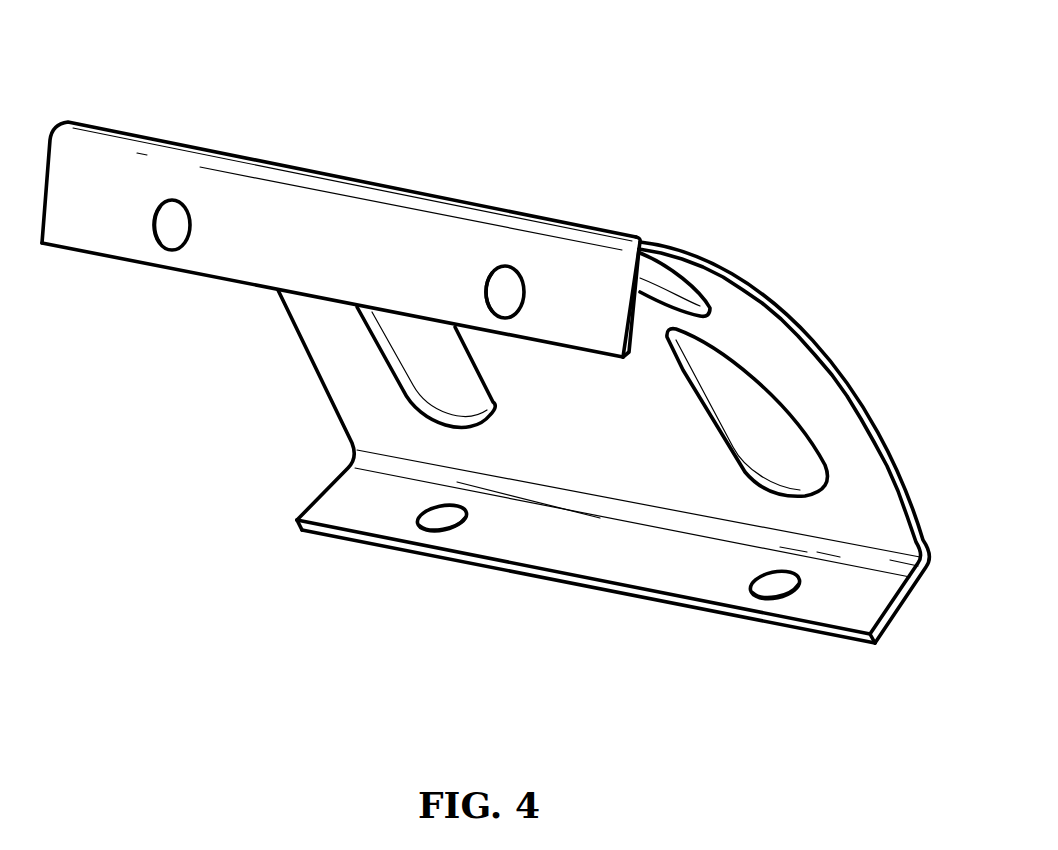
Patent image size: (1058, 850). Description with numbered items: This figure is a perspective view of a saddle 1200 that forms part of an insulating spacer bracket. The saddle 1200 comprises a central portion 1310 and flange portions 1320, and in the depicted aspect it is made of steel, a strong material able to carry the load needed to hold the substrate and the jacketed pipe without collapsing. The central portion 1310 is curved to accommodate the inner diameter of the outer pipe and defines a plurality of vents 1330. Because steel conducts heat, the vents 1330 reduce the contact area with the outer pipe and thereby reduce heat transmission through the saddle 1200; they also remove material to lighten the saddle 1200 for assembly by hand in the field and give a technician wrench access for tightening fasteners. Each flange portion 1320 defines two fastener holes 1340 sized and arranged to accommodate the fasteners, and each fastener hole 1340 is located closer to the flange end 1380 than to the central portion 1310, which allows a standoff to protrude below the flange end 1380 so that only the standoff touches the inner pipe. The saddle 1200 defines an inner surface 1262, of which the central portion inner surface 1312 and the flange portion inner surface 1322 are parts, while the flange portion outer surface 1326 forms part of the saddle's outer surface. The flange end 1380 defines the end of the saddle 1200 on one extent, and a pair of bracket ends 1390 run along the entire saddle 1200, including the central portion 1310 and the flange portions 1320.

The saddle 1200 is at (638, 620).
The inner surface 1262 is at (677, 430).
The central portion 1310 is at (895, 513).
The central portion inner surface 1312 is at (604, 468).
The flange portion 1320 is at (260, 230).
The flange portion inner surface 1322 is at (612, 554).
The flange portion outer surface 1326 is at (389, 268).
The vent 1330 is at (497, 410).
The fastener hole 1340 is at (511, 267).
The flange end 1380 is at (198, 275).
The bracket end 1390 is at (53, 132).